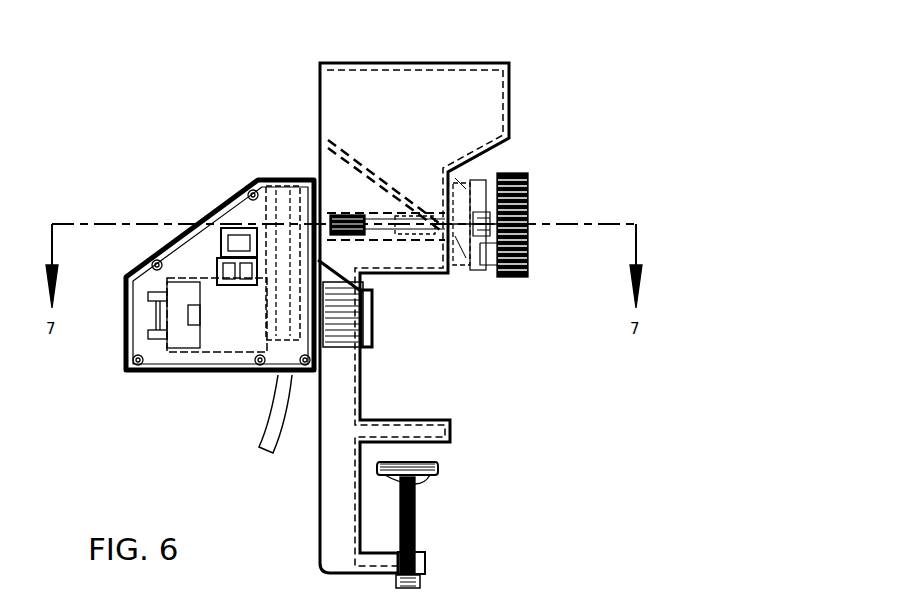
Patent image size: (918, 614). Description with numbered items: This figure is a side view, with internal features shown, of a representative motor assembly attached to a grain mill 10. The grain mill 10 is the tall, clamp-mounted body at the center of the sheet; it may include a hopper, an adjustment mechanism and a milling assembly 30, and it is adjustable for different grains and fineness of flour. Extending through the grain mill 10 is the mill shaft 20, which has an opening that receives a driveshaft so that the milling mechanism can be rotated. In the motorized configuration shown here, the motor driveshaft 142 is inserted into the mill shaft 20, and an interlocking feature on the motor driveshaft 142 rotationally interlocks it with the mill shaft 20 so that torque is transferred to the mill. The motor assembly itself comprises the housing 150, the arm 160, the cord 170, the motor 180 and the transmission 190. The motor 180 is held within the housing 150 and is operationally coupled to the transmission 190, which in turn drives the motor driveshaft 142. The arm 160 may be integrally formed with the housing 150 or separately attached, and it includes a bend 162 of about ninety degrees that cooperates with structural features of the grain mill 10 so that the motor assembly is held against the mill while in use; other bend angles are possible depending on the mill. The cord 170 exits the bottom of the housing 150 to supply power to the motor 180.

The grain mill 10 is at (510, 86).
The mill shaft 20 is at (355, 255).
The milling assembly 30 is at (462, 247).
The motor driveshaft 142 is at (355, 255).
The housing 150 is at (215, 197).
The arm 160 is at (345, 350).
The bend 162 is at (366, 330).
The cord 170 is at (276, 421).
The motor 180 is at (215, 330).
The transmission 190 is at (285, 210).